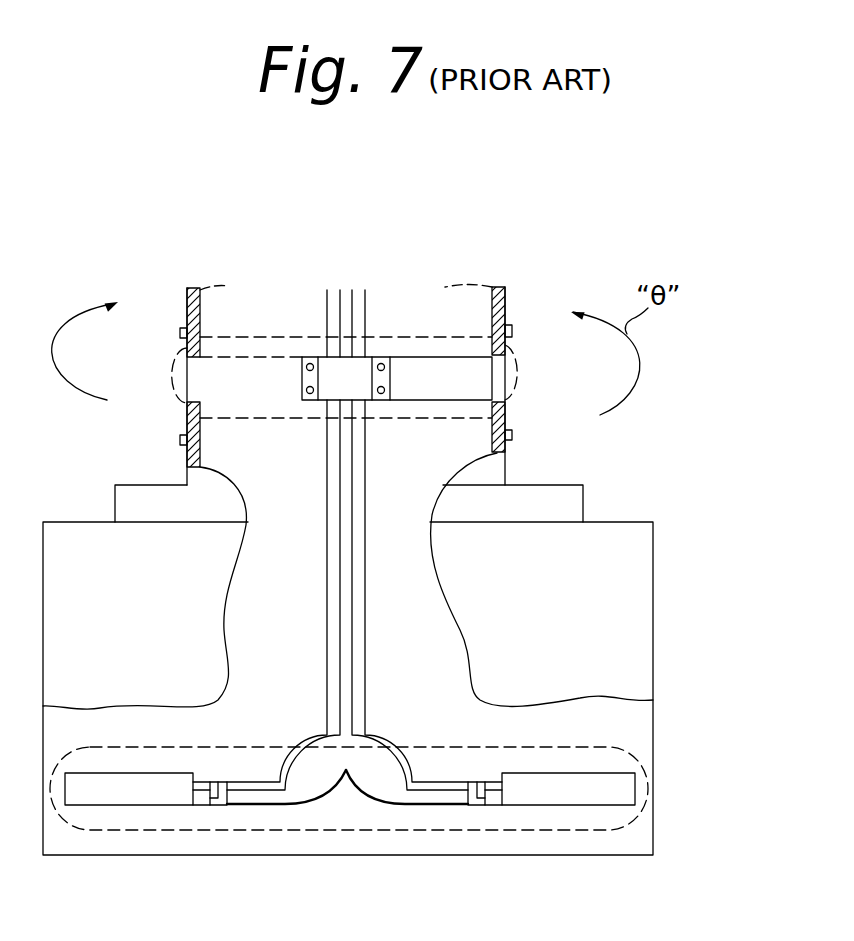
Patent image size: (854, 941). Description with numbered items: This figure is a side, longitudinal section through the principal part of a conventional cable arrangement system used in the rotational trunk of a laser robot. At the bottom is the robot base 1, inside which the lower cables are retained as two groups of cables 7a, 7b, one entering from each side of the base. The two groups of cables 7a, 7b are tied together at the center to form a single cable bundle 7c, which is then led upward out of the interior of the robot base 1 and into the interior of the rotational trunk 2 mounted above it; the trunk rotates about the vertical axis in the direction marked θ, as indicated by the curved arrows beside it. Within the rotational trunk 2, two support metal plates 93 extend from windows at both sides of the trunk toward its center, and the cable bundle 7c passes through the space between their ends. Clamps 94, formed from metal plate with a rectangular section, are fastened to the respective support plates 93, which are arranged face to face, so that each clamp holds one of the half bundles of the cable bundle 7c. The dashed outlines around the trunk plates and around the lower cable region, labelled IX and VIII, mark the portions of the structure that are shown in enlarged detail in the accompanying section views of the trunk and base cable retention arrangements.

The robot base 1 is at (648, 826).
The rotational trunk 2 is at (497, 302).
The support metal plate 93 is at (265, 372).
The clamp 94 is at (333, 376).
The group of cables 7a is at (250, 800).
The group of cables 7b is at (448, 796).
The cable bundle 7c is at (356, 636).
The section IX indicator IX is at (468, 332).
The section VIII indicator VIII is at (640, 745).